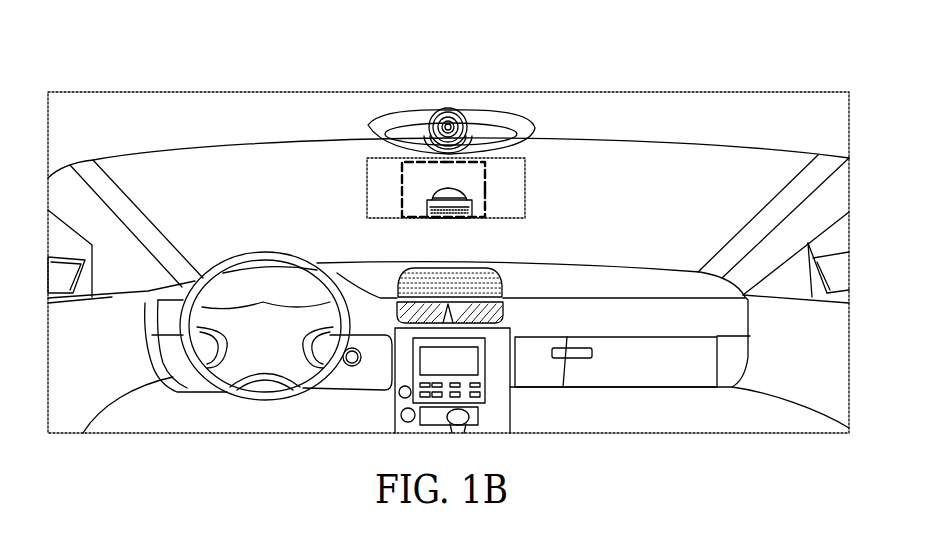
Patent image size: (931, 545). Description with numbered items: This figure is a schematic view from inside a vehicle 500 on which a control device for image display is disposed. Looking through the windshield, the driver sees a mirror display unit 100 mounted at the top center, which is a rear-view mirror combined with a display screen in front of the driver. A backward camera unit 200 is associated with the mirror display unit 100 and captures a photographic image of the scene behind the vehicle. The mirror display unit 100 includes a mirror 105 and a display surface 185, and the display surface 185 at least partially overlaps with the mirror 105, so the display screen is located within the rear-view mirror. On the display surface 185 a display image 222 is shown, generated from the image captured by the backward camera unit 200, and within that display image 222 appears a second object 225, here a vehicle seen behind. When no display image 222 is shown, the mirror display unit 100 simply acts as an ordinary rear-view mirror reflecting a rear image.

The vehicle 500 is at (107, 129).
The mirror 105 is at (382, 195).
The display image 222 is at (402, 165).
The backward camera unit 200 is at (435, 116).
The display surface 185 is at (468, 162).
The mirror display unit 100 is at (525, 170).
The second object 225 is at (467, 207).